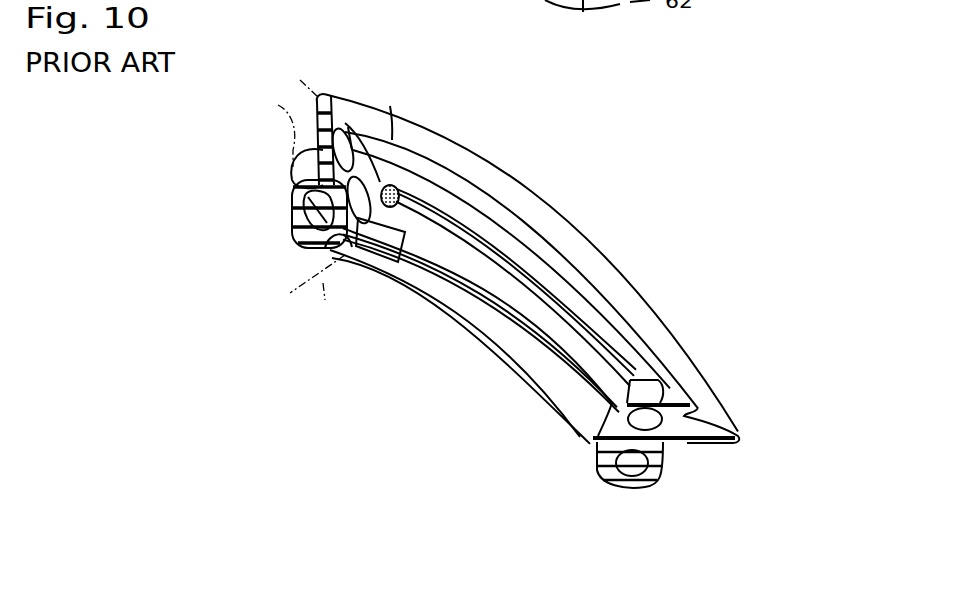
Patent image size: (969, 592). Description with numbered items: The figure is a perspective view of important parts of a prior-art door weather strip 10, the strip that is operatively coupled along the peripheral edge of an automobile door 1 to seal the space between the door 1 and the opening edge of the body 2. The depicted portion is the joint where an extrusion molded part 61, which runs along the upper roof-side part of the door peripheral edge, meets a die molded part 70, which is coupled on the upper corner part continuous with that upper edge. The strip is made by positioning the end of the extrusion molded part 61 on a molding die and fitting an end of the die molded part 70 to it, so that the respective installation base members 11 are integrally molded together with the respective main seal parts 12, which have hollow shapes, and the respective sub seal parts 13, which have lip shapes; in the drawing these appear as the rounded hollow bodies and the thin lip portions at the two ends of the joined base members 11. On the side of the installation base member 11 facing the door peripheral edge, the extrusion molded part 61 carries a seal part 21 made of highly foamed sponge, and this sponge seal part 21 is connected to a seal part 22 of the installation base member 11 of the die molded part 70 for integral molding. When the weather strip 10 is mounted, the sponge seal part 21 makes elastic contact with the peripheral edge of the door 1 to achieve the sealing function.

The door 1 is at (325, 298).
The body 2 is at (283, 172).
The door weather strip 10 is at (481, 366).
The installation base member 11 is at (403, 240).
The main seal part 12 is at (292, 205).
The sub seal part 13 is at (318, 117).
The seal part 21 is at (425, 207).
The seal part 22 is at (530, 270).
The extrusion molded part 61 is at (381, 237).
The die molded part 70 is at (550, 385).